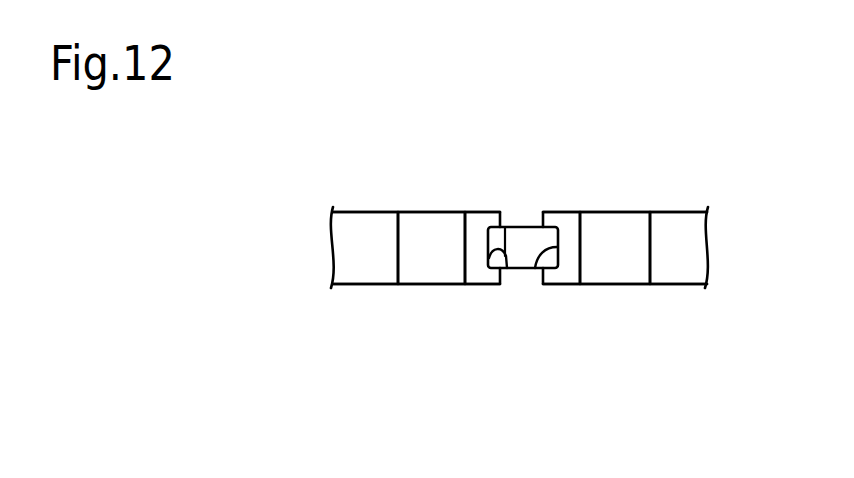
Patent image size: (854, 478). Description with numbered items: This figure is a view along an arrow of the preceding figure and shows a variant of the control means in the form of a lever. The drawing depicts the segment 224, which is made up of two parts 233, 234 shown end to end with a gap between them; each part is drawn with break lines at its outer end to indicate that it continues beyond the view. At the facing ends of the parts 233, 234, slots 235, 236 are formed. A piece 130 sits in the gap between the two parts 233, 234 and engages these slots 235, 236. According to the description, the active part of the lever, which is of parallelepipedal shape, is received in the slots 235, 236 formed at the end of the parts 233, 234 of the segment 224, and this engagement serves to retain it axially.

The segment 224 is at (373, 285).
The part of the segment 233 is at (438, 211).
The part of the segment 234 is at (597, 211).
The connecting element 130 is at (515, 225).
The slot 235 is at (512, 268).
The slot 236 is at (532, 268).